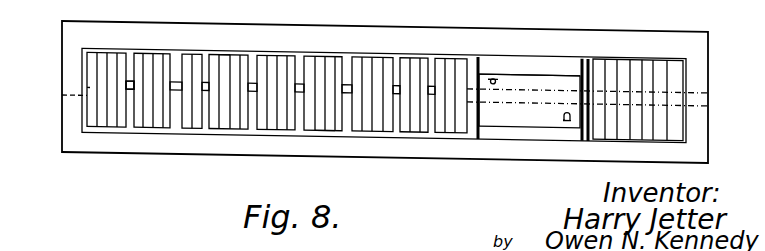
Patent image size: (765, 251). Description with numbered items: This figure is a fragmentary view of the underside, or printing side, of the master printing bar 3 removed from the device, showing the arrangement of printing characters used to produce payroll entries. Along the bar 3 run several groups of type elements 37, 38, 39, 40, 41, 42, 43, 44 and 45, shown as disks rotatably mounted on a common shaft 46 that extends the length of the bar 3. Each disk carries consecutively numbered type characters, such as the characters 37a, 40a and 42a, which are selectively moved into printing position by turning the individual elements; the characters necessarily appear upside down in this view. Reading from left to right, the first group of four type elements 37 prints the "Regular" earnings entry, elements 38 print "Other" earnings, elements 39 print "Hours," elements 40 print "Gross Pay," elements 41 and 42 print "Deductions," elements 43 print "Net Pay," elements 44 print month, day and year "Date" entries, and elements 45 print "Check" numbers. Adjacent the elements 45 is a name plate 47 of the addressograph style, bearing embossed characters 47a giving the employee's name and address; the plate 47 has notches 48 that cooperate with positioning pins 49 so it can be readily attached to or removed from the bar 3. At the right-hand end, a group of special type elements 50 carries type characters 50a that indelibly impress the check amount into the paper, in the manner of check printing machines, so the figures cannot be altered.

The printing bar 3 is at (615, 33).
The type elements 37 is at (112, 124).
The type characters 37a is at (88, 88).
The type elements 38 is at (168, 120).
The type elements 39 is at (200, 121).
The type elements 40 is at (247, 120).
The type characters 40a is at (222, 85).
The type elements 41 is at (284, 119).
The type elements 42 is at (323, 61).
The type characters 42a is at (328, 118).
The type elements 43 is at (383, 62).
The type elements 44 is at (412, 67).
The type elements 45 is at (450, 118).
The common shaft 46 is at (130, 87).
The name plate 47 is at (533, 107).
The embossed characters 47a is at (500, 78).
The notches 48 is at (505, 78).
The positioning pins 49 is at (493, 71).
The special type elements 50 is at (637, 70).
The type characters 50a is at (662, 82).